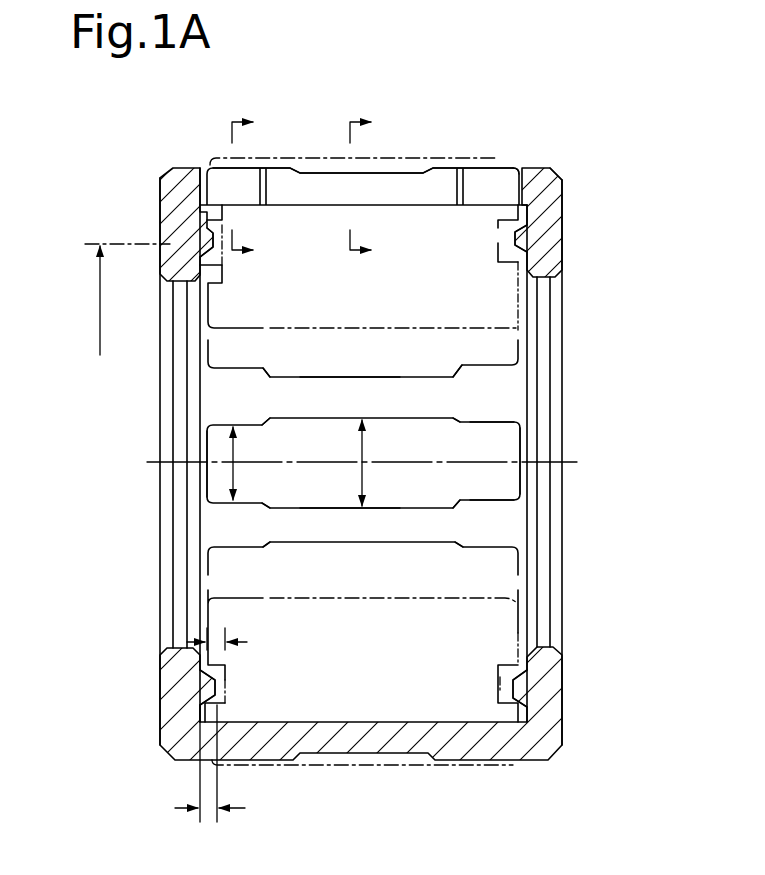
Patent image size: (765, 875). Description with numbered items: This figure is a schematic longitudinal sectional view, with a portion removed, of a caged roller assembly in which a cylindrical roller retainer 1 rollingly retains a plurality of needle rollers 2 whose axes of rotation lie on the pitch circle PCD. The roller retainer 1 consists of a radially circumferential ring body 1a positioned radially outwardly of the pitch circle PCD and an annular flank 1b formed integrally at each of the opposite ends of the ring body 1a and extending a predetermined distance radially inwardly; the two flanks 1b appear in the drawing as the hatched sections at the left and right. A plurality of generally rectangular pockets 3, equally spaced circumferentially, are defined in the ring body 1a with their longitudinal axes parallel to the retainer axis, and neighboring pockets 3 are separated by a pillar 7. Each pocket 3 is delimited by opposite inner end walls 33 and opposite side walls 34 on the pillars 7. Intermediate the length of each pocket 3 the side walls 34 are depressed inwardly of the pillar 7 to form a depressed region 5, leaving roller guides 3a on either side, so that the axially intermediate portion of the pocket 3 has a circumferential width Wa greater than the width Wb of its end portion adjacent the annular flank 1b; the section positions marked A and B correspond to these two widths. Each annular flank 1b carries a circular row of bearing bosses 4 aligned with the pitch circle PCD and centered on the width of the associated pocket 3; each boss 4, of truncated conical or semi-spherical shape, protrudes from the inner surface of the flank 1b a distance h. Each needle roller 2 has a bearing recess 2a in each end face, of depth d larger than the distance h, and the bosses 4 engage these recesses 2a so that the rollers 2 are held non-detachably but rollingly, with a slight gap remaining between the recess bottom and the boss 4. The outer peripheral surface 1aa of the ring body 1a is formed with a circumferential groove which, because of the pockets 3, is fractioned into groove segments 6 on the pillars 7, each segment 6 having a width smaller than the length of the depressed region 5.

The roller retainer 1 is at (147, 184).
The circumferential ring body 1a is at (556, 180).
The outer peripheral surface 1aa is at (522, 168).
The annular flank 1b is at (160, 218).
The needle roller 2 is at (445, 160).
The bearing recess 2a is at (522, 245).
The pocket 3 is at (226, 180).
The roller guide 3a is at (237, 187).
The bearing boss 4 is at (207, 243).
The depressed region 5 is at (322, 187).
The groove segment 6 is at (386, 172).
The pillar 7 is at (335, 387).
The inner end wall 33 is at (212, 482).
The side wall 34 is at (520, 428).
The pitch circle PCD is at (99, 299).
The circumferential width of axially intermediate portion of pocket Wa is at (350, 499).
The circumferential width of end portion of pocket Wb is at (260, 502).
The depth of bearing recess d is at (220, 636).
The protruding distance of bearing boss h is at (208, 812).
The section line A- A is at (361, 188).
The section line B- B is at (244, 188).